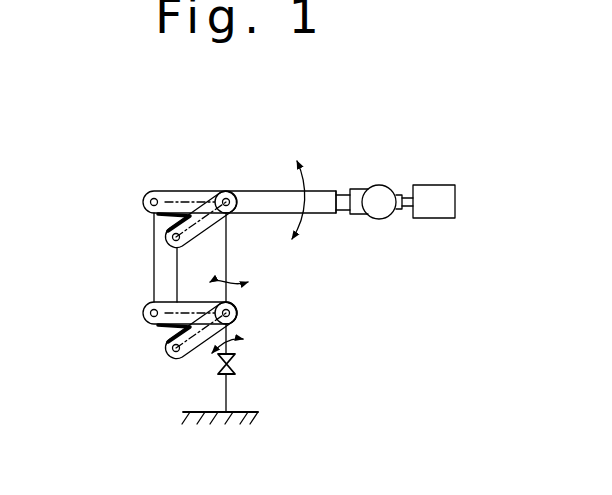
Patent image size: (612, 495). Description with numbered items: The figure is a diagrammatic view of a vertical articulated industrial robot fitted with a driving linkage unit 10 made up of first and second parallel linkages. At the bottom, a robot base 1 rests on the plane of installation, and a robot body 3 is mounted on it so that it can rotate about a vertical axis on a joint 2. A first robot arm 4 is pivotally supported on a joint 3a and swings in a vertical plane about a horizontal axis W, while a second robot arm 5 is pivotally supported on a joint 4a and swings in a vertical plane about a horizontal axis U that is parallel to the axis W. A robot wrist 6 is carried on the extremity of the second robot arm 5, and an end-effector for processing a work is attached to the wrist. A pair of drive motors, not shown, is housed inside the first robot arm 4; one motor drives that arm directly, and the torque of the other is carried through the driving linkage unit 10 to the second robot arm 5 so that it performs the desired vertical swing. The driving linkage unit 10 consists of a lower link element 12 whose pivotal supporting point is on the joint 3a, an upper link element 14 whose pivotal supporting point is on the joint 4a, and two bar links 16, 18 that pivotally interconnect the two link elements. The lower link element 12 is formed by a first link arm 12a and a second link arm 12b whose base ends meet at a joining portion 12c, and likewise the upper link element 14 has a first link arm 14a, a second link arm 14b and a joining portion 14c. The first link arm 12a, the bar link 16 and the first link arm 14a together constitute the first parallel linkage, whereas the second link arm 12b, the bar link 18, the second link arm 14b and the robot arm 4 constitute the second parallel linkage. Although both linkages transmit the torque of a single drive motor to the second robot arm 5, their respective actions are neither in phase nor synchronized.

The robot base 1 is at (232, 397).
The joint 2 is at (238, 370).
The robot body 3 is at (246, 343).
The joint 3a is at (238, 318).
The first robot arm 4 is at (229, 256).
The joint 4a is at (250, 191).
The second robot arm 5 is at (313, 192).
The robot wrist 6 is at (382, 186).
The driving linkage unit 10 is at (122, 257).
The lower link element 12 is at (197, 330).
The first link arm 12a is at (188, 355).
The second link arm 12b is at (161, 321).
The joining portion 12c is at (236, 302).
The upper link element 14 is at (232, 185).
The first link arm 14a is at (225, 224).
The second link arm 14b is at (183, 191).
The joining portion 14c is at (227, 190).
The bar link 16 is at (177, 279).
The bar link 18 is at (154, 225).
The axis U is at (299, 162).
The axis W is at (252, 281).